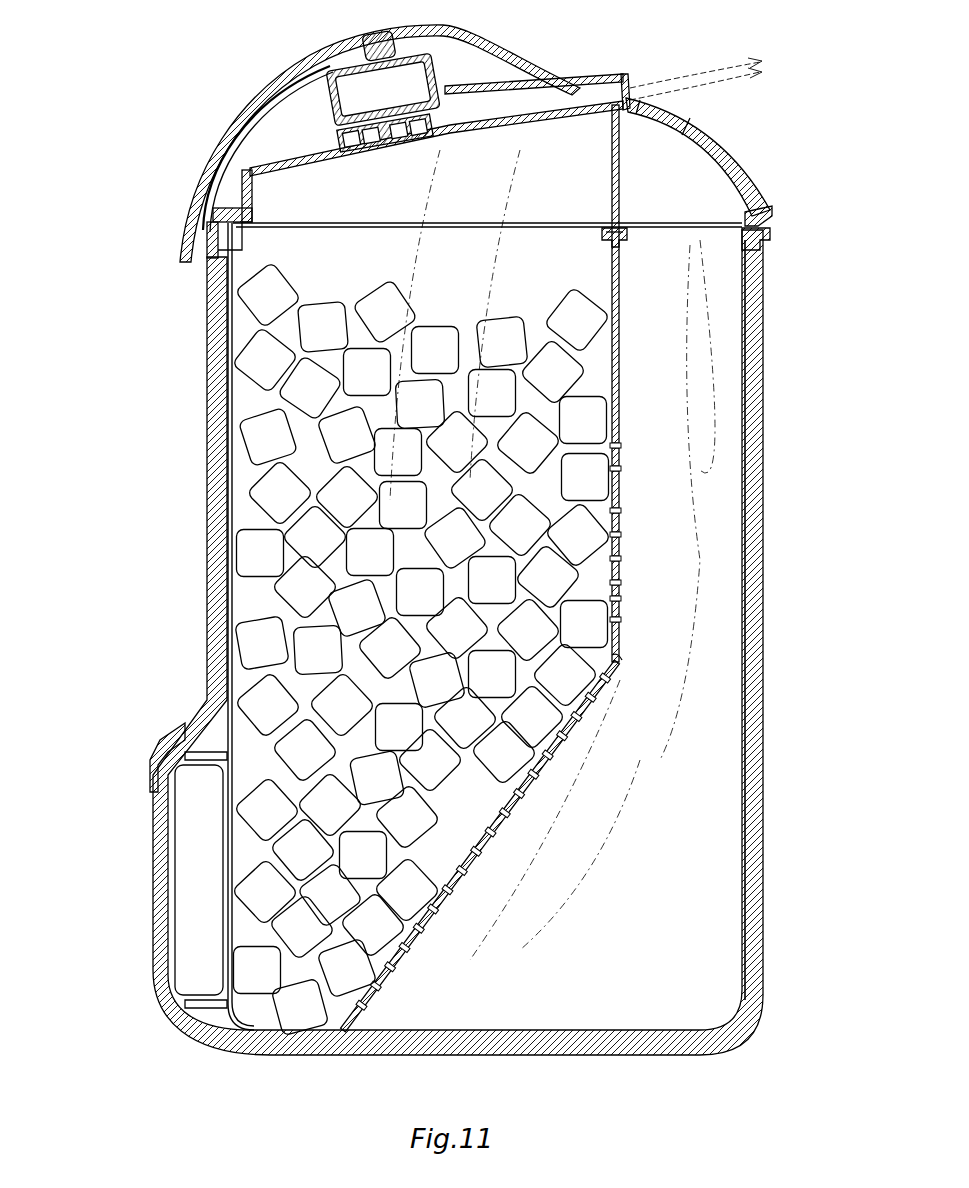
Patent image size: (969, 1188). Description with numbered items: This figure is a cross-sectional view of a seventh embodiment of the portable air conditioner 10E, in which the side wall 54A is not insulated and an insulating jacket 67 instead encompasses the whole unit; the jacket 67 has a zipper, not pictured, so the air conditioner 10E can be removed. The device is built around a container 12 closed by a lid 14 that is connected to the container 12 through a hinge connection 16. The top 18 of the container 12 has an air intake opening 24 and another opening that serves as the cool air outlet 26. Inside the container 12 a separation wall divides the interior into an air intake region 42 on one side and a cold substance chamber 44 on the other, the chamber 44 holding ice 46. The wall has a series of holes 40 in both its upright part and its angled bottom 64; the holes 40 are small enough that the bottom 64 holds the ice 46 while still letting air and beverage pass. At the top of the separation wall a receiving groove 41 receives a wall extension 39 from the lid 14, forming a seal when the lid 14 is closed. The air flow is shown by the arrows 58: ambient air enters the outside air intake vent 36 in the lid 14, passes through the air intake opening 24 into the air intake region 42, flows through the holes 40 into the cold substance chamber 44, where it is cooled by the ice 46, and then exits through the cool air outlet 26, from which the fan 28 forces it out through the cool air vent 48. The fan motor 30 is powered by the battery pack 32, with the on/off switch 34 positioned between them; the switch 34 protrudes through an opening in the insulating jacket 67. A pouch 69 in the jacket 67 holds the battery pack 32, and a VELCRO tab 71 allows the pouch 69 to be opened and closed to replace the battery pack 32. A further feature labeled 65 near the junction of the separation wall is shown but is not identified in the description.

The portable air conditioner 10E is at (109, 31).
The container 12 is at (213, 300).
The lid 14 is at (254, 133).
The hinge connection 16 is at (207, 235).
The top 18 is at (520, 230).
The air intake opening 24 is at (690, 232).
The cool air outlet 26 is at (455, 235).
The fan 28 is at (470, 42).
The fan motor 30 is at (350, 72).
The battery pack 32 is at (190, 900).
The on/off switch 34 is at (378, 45).
The outside air intake vent 36 is at (690, 140).
The wall extension 39 is at (613, 190).
The holes 40 is at (622, 471).
The receiving groove 41 is at (613, 230).
The air intake region 42 is at (690, 520).
The cold substance chamber 44 is at (303, 688).
The ice 46 is at (295, 580).
The cool air vent 48 is at (622, 95).
The side wall 54A is at (752, 412).
The arrows 58 is at (483, 288).
The bottom of the separation wall 64 is at (515, 795).
The wall bend 65 is at (625, 663).
The insulating jacket 67 is at (287, 78).
The pouch 69 is at (155, 855).
The VELCRO tab 71 is at (160, 775).